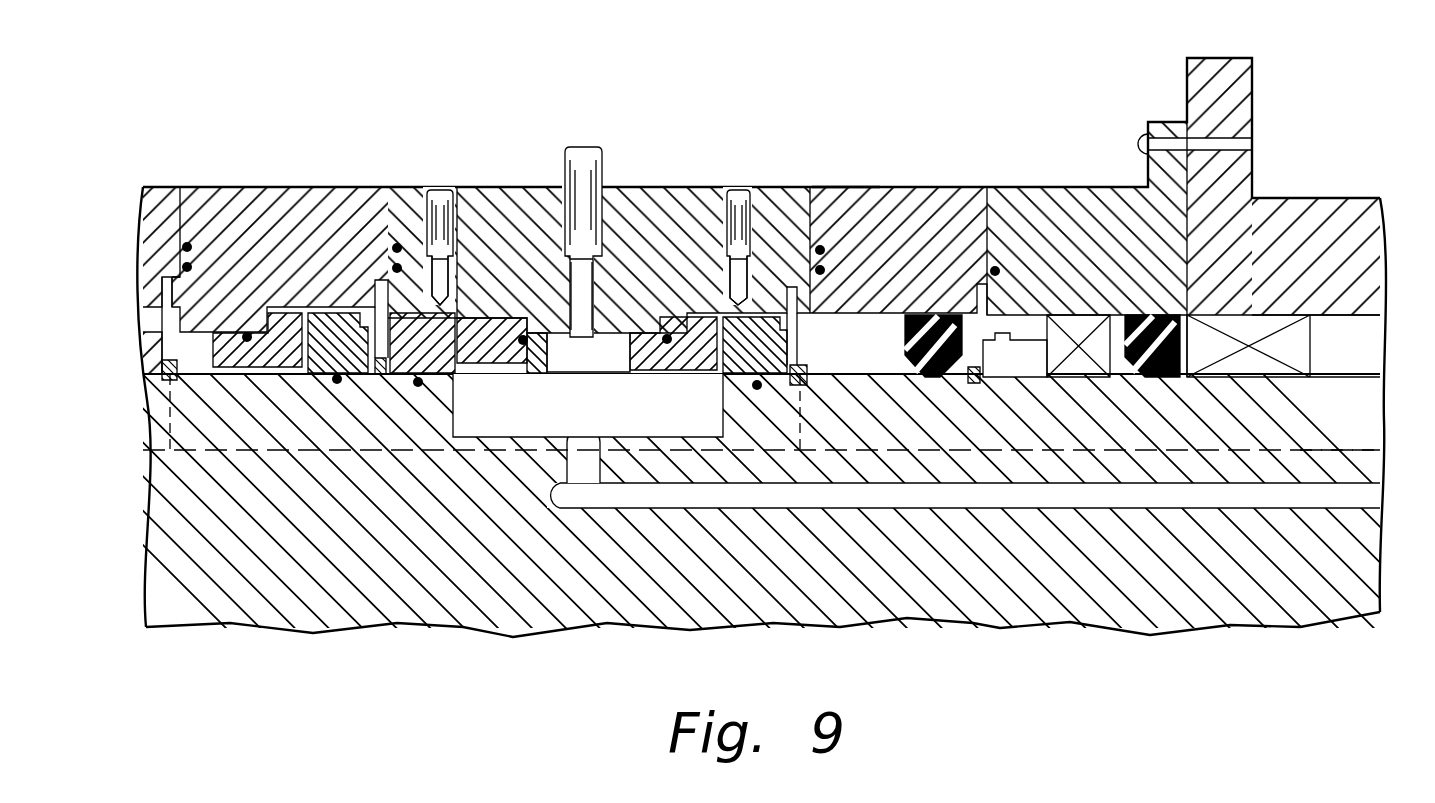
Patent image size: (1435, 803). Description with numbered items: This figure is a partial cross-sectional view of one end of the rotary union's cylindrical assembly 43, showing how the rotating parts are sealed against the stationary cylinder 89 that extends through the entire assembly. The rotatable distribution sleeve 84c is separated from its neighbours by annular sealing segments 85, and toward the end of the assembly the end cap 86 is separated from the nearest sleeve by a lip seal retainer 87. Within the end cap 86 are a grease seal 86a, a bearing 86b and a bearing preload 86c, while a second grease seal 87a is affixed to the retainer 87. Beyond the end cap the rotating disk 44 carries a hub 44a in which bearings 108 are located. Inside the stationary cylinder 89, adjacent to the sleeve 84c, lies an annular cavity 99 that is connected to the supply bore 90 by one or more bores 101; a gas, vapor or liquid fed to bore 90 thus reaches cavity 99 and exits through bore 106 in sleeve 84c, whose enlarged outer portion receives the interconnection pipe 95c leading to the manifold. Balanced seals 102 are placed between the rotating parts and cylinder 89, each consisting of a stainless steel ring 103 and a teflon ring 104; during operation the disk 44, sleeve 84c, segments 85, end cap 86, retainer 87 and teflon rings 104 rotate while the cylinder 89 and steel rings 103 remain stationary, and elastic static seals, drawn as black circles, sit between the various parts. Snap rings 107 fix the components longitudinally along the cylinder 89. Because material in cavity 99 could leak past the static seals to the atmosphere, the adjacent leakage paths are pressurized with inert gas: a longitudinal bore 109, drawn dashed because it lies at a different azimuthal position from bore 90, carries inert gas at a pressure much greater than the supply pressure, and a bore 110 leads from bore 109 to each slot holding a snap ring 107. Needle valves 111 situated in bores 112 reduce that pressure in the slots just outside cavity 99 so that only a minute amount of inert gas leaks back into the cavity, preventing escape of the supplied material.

The cylindrical assembly 43 is at (843, 184).
The disk 44 is at (1187, 72).
The hub 44a is at (1312, 198).
The distribution sleeve 84c is at (656, 187).
The annular sealing segment 85 is at (284, 187).
The end cap 86 is at (1060, 187).
The grease seal 86a is at (1148, 380).
The bearing 86b is at (1080, 380).
The bearing preload 86c is at (1010, 380).
The lip seal retainer 87 is at (906, 187).
The second grease seal 87a is at (906, 380).
The stationary cylinder 89 is at (1140, 628).
The bore 90 is at (880, 486).
The interconnection pipe 95c is at (562, 176).
The annular cavity 99 is at (646, 424).
The bore 101 is at (567, 460).
The balanced seal 102 is at (268, 376).
The stainless steel ring 103 is at (303, 376).
The teflon ring 104 is at (252, 372).
The bore 106 is at (586, 300).
The snap ring 107 is at (160, 376).
The bearing 108 is at (1300, 345).
The bore 109 is at (1352, 448).
The bore 110 is at (170, 446).
The needle valve 111 is at (433, 187).
The bore 112 is at (449, 270).